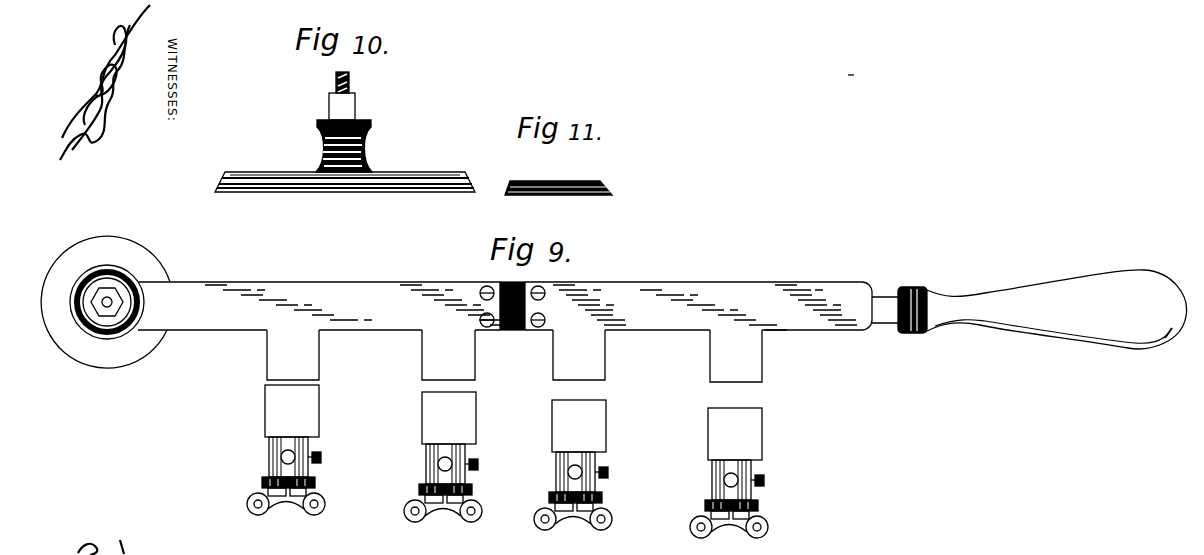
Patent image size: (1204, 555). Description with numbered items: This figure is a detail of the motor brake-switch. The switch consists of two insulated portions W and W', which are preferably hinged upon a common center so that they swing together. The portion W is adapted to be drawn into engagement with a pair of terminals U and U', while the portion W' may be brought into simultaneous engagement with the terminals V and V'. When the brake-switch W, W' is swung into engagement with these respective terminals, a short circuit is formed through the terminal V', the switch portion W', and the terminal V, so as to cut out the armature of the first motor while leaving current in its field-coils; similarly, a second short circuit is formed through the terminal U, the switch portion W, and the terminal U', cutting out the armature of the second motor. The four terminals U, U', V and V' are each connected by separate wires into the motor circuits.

The insulated portion of brake-switch W is at (698, 332).
The insulated portion of brake-switch W' is at (325, 331).
The terminal V is at (428, 457).
The terminal V' is at (273, 450).
The terminal U is at (714, 473).
The terminal U' is at (558, 465).